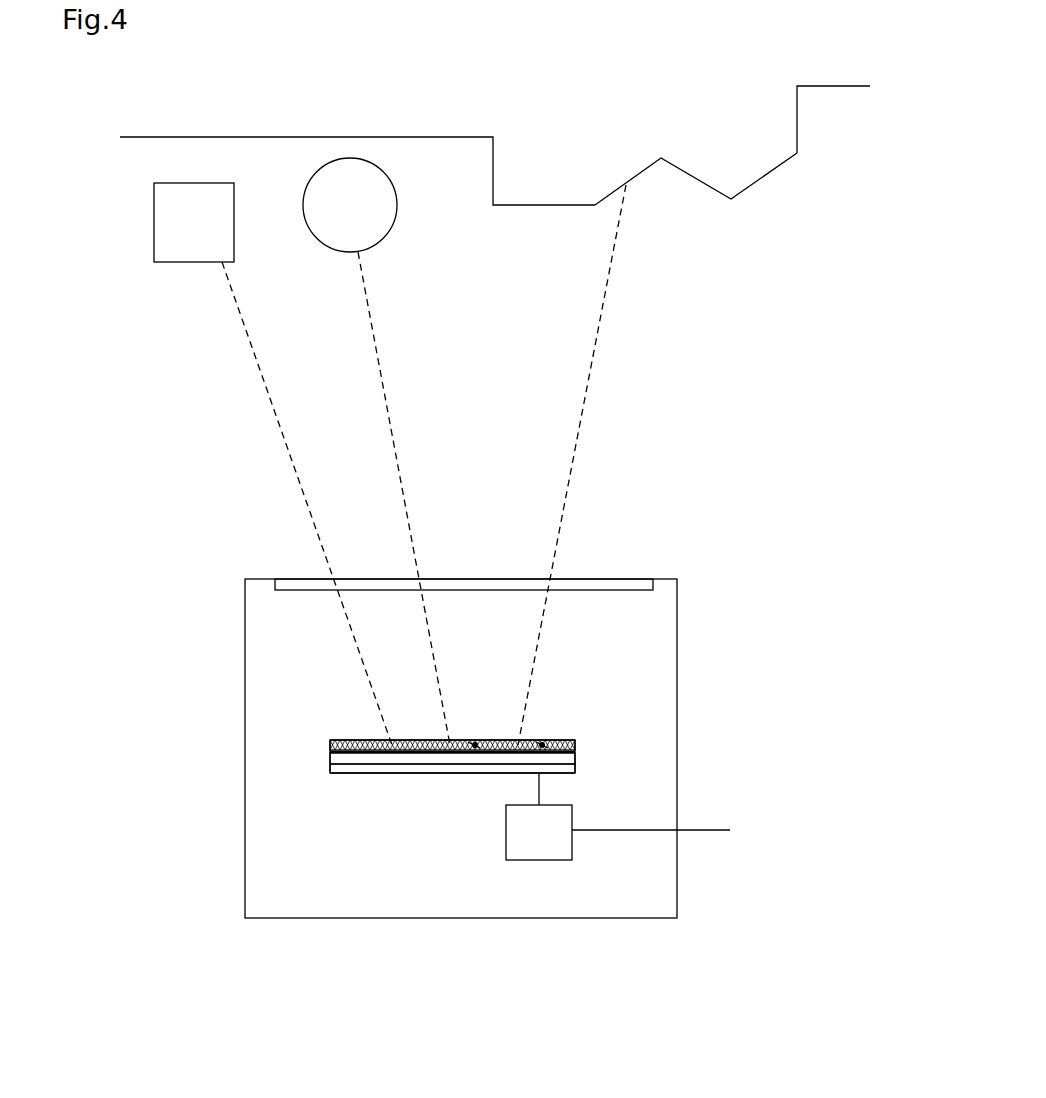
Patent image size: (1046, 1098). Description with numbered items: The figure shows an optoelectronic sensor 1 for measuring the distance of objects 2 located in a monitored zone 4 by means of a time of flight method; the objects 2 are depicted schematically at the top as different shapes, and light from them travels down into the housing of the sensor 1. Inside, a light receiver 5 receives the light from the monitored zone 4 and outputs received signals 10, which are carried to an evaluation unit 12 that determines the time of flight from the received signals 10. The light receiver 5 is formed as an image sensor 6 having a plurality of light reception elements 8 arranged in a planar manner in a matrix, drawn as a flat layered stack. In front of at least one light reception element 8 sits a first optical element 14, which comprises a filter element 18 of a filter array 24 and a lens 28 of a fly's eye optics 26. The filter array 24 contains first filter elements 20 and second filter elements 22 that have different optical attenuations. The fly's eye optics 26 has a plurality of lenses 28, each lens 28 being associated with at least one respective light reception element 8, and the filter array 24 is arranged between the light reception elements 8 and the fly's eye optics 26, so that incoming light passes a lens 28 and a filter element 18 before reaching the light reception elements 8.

The optoelectronic sensor 1 is at (620, 520).
The objects 2 is at (180, 250).
The monitored zone 4 is at (750, 362).
The light receiver 5 is at (327, 771).
The image sensor 6 is at (370, 767).
The light reception elements 8 is at (458, 777).
The received signals 10 is at (541, 789).
The evaluation unit 12 is at (529, 837).
The first optical element 14 is at (327, 745).
The filter element 18 is at (477, 744).
The first filter elements 20 is at (473, 744).
The second filter elements 22 is at (542, 744).
The filter array 24 is at (578, 745).
The fly's eye optics 26 is at (330, 740).
The lens 28 is at (358, 738).